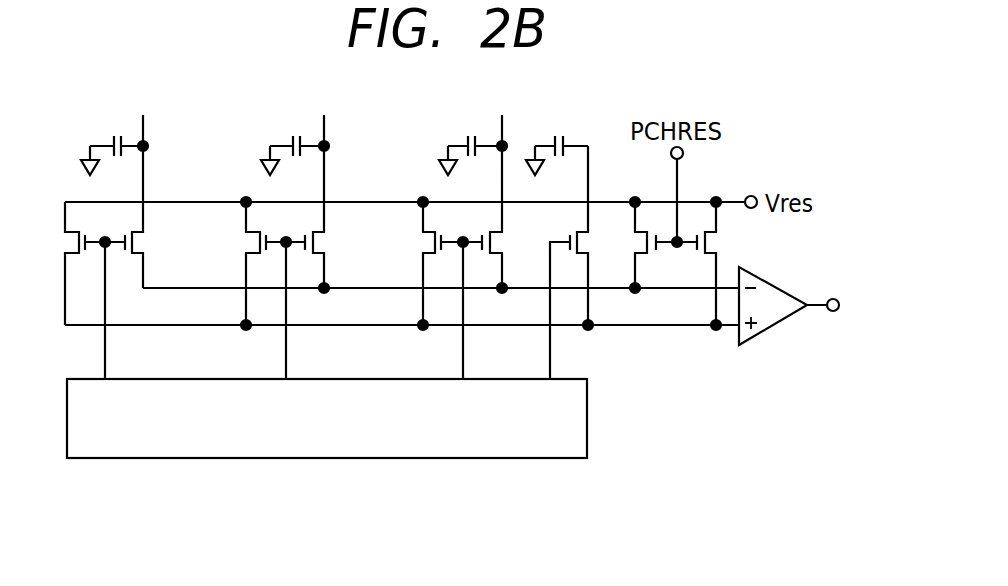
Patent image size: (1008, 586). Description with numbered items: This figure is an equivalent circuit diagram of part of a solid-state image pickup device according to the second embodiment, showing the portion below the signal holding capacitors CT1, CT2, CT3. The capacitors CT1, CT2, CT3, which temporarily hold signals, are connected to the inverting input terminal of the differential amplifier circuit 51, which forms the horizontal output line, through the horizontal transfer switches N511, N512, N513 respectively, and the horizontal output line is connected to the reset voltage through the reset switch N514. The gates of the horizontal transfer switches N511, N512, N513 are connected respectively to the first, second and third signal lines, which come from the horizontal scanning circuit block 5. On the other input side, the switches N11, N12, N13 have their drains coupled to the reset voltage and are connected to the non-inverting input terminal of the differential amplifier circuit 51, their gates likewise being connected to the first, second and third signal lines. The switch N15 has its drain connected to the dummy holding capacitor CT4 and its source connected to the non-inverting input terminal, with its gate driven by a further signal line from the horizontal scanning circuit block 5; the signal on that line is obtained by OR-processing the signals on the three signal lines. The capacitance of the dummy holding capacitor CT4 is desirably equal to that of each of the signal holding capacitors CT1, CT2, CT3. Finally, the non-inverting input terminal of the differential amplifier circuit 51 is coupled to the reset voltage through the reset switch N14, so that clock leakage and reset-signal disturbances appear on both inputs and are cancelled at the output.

The horizontal scanning circuit block 5 is at (587, 397).
The differential amplifier circuit 51 is at (777, 328).
The switch N11 is at (66, 263).
The switch N12 is at (243, 263).
The switch N13 is at (422, 263).
The reset switch N14 is at (719, 263).
The switch N15 is at (564, 290).
The horizontal transfer switch N511 is at (115, 245).
The horizontal transfer switch N512 is at (296, 245).
The horizontal transfer switch N513 is at (473, 245).
The reset switch N514 is at (665, 245).
The signal holding capacitor CT1 is at (114, 154).
The signal holding capacitor CT2 is at (295, 154).
The signal holding capacitor CT3 is at (473, 154).
The dummy holding capacitor CT4 is at (557, 154).